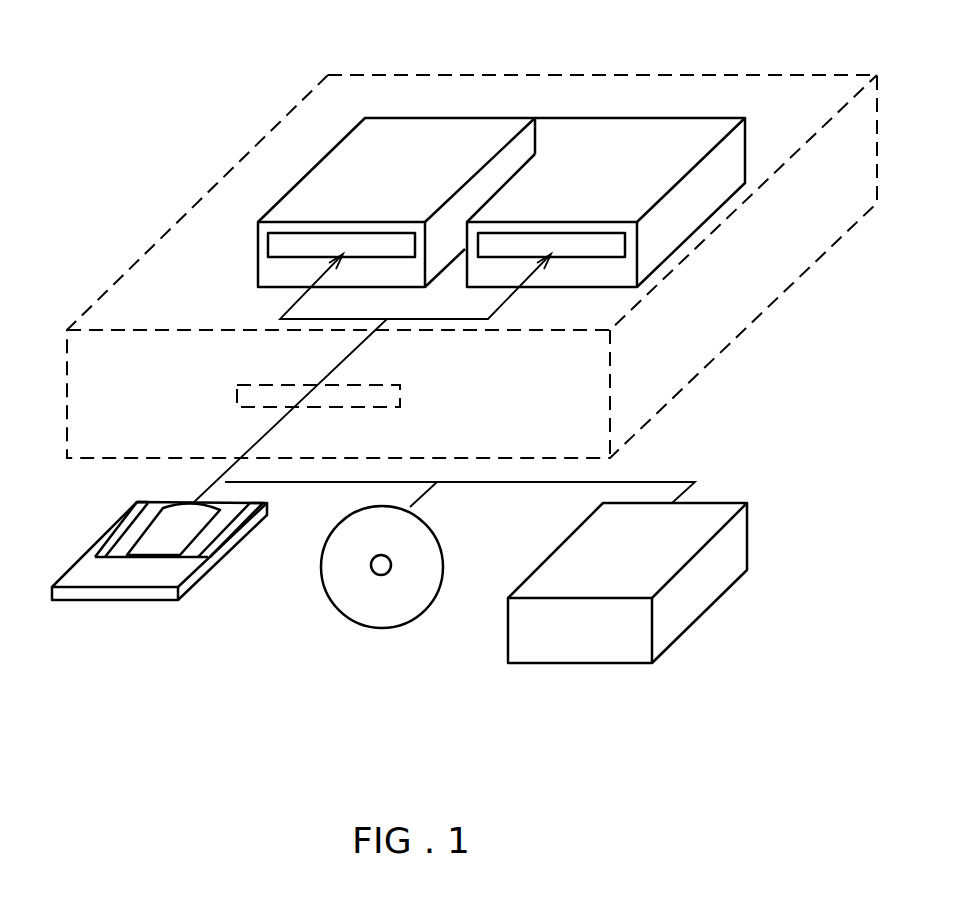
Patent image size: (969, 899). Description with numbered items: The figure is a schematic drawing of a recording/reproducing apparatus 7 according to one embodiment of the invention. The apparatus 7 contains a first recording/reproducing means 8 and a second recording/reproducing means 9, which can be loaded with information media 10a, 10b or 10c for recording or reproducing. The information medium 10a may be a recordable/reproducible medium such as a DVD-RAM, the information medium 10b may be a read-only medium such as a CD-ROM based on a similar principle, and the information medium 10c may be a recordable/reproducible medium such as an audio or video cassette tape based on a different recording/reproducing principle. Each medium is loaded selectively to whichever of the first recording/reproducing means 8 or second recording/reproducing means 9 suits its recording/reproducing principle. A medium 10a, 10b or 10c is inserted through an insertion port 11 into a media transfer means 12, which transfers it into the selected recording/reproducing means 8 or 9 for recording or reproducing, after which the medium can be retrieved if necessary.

The recording/reproducing apparatus 7 is at (632, 76).
The first recording/reproducing means 8 is at (393, 170).
The second recording/reproducing means 9 is at (583, 163).
The information medium 10a is at (135, 602).
The information medium 10b is at (382, 623).
The information medium 10c is at (607, 663).
The insertion port 11 is at (272, 383).
The media transfer means 12 is at (288, 305).